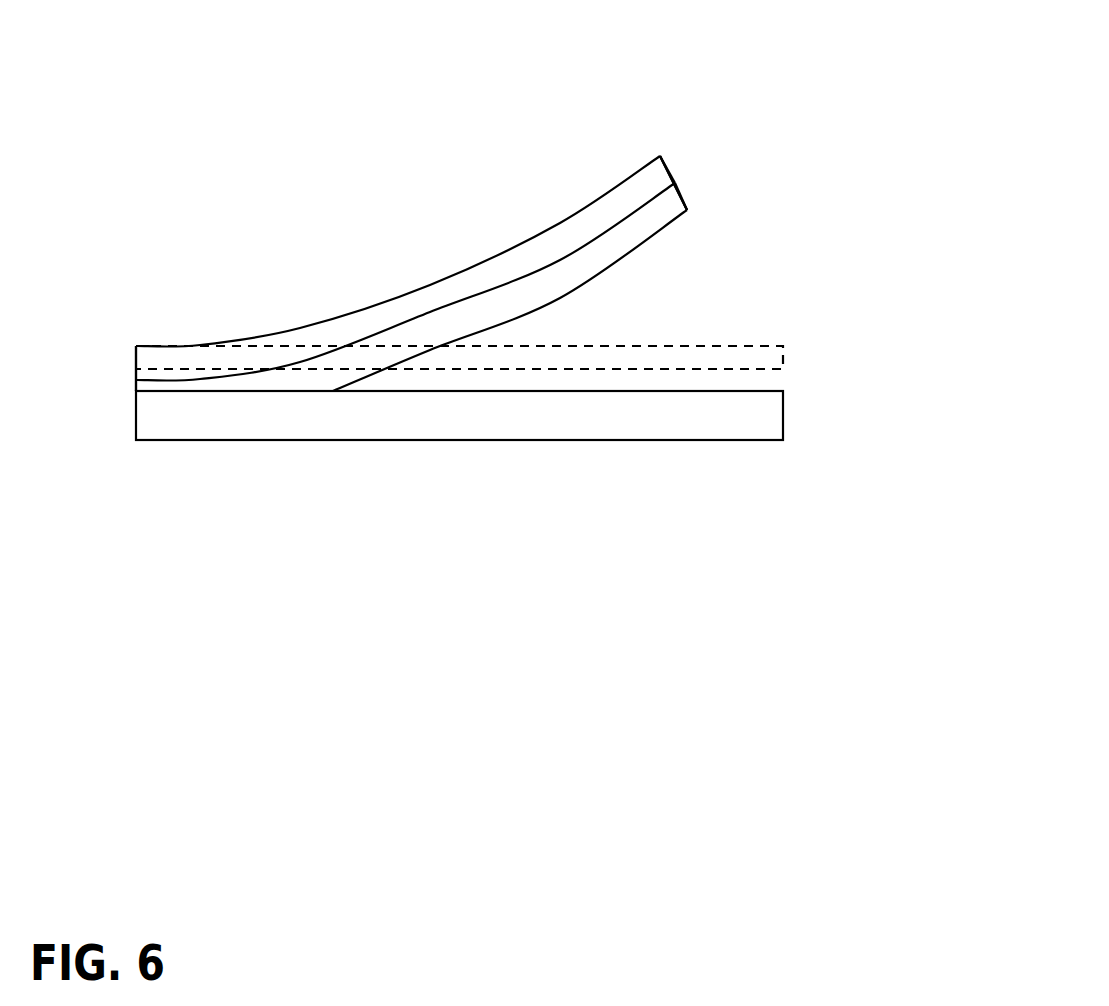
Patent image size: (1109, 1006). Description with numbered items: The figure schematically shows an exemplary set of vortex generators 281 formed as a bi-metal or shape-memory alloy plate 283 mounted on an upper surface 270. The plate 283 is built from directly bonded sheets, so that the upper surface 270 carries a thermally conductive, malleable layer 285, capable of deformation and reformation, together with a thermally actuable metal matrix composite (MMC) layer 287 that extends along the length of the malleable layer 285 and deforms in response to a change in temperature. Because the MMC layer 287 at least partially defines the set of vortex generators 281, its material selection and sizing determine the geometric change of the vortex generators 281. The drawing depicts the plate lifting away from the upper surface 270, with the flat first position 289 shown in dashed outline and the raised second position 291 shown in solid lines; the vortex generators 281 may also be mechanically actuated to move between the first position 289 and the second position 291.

The upper surface 270 is at (679, 415).
The set of vortex generators 281 is at (647, 131).
The bi-metal or shape-memory alloy plate 283 is at (155, 378).
The malleable layer 285 is at (595, 257).
The MMC layer 287 is at (488, 273).
The first position 289 is at (762, 347).
The second position 291 is at (675, 183).